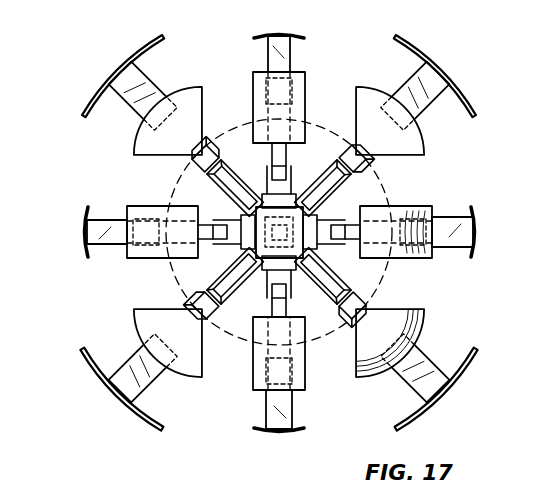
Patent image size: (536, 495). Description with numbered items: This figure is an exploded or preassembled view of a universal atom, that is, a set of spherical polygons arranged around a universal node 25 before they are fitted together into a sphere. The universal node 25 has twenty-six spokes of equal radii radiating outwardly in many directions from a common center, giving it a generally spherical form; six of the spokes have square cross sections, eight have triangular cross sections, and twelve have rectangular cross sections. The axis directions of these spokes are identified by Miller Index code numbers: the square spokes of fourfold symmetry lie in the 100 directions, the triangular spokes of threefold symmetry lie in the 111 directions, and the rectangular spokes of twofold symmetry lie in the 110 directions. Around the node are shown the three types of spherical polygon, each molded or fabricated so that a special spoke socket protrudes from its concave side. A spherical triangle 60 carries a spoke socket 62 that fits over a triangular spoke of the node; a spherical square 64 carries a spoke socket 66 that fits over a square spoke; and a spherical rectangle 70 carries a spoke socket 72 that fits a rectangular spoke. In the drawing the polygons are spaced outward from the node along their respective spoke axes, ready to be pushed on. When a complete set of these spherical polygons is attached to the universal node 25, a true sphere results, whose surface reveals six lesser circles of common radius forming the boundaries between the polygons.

The universal node 25 is at (301, 175).
The spherical triangle 60 is at (203, 95).
The spoke socket 62 is at (218, 147).
The spherical square 64 is at (300, 36).
The spoke socket 66 is at (293, 62).
The spherical rectangle 70 is at (124, 57).
The spoke socket 72 is at (151, 78).
The 100 directions 100 is at (272, 262).
The 110 directions 110 is at (336, 213).
The 111 directions 111 is at (243, 172).